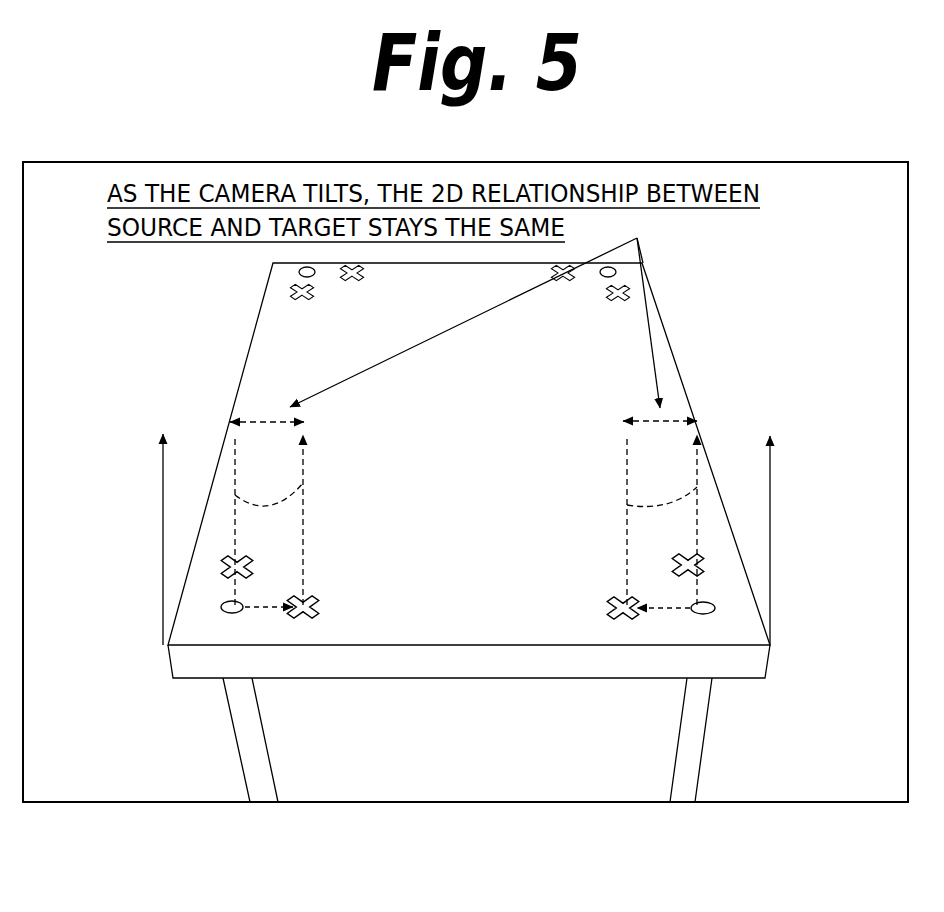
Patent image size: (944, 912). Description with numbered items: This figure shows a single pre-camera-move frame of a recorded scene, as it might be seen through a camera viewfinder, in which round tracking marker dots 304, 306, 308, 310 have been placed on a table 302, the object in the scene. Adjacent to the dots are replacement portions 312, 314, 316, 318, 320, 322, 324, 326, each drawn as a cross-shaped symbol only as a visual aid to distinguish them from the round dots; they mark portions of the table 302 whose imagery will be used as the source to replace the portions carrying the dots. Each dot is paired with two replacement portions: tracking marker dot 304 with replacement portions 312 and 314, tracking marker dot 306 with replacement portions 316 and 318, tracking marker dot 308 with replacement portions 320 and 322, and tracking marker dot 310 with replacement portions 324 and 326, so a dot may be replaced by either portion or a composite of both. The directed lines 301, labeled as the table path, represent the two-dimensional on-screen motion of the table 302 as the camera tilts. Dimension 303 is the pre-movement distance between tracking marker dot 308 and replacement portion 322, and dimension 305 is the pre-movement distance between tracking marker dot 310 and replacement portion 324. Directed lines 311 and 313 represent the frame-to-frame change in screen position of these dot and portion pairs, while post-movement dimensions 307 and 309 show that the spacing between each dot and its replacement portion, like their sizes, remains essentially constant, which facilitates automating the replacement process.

The directed lines 301 is at (770, 492).
The table 302 is at (672, 360).
The pre-movement dimension 303 is at (262, 610).
The tracking marker dot 304 is at (299, 272).
The pre-movement dimension 305 is at (667, 612).
The tracking marker dot 306 is at (618, 268).
The post-movement dimension 307 is at (267, 422).
The tracking marker dot 308 is at (225, 611).
The post-movement dimension 309 is at (672, 420).
The tracking marker dot 310 is at (713, 611).
The directed lines 311 is at (303, 490).
The replacement portion 312 is at (292, 296).
The directed lines 313 is at (627, 478).
The replacement portion 314 is at (362, 278).
The replacement portion 316 is at (572, 284).
The replacement portion 318 is at (632, 296).
The replacement portion 320 is at (255, 556).
The replacement portion 322 is at (317, 616).
The replacement portion 324 is at (606, 610).
The replacement portion 326 is at (672, 560).